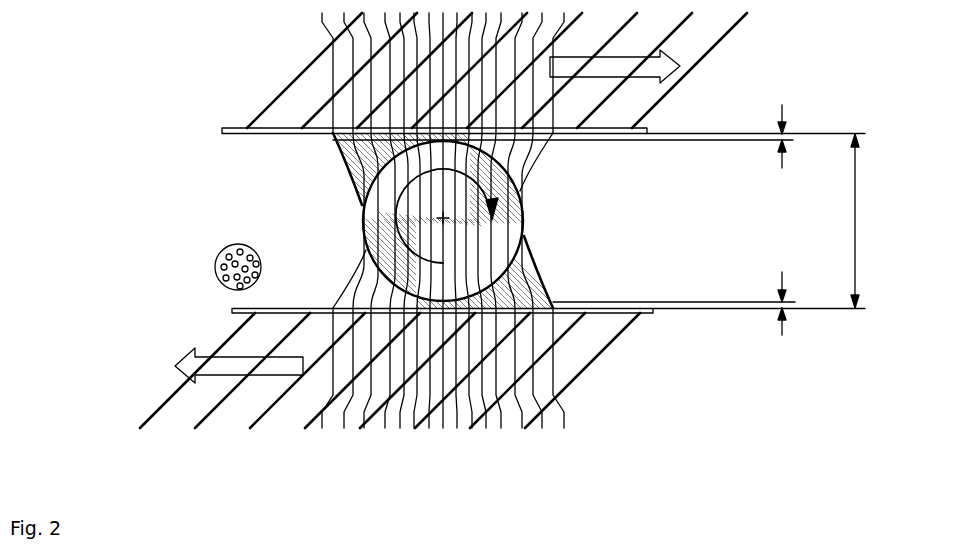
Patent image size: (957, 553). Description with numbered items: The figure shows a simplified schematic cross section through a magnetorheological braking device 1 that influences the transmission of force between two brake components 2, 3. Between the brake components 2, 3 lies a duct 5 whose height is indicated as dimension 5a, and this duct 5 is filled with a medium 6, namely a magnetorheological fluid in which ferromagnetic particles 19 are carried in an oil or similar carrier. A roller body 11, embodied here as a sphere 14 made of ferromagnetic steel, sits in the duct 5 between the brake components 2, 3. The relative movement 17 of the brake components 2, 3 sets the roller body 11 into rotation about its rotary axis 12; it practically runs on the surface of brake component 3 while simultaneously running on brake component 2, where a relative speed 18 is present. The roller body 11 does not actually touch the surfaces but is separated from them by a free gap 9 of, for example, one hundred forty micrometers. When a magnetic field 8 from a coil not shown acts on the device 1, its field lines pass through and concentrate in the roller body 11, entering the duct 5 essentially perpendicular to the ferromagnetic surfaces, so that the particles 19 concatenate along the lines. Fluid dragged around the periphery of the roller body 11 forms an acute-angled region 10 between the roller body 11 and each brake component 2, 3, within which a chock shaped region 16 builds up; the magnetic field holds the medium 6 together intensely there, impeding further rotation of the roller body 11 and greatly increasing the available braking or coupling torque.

The magnetorheological braking device 1 is at (185, 82).
The brake component 2 is at (610, 347).
The brake component 3 is at (543, 76).
The duct 5 is at (237, 182).
The channel height 5a is at (857, 187).
The medium 6 is at (191, 258).
The magnetic field 8 is at (337, 62).
The free gap 9 is at (790, 138).
The acute-angled region 10 is at (333, 151).
The roller body 11 is at (510, 182).
The rotary axis 12 is at (445, 218).
The sphere 14 is at (363, 227).
The chock shaped region 16 is at (357, 163).
The relative movement 17 is at (688, 55).
The relative speed 18 is at (226, 365).
The ferromagnetic particles 19 is at (222, 267).